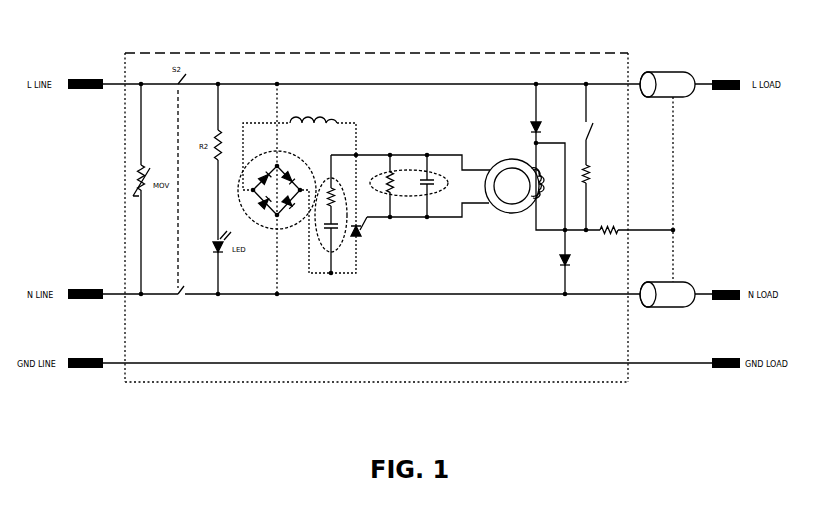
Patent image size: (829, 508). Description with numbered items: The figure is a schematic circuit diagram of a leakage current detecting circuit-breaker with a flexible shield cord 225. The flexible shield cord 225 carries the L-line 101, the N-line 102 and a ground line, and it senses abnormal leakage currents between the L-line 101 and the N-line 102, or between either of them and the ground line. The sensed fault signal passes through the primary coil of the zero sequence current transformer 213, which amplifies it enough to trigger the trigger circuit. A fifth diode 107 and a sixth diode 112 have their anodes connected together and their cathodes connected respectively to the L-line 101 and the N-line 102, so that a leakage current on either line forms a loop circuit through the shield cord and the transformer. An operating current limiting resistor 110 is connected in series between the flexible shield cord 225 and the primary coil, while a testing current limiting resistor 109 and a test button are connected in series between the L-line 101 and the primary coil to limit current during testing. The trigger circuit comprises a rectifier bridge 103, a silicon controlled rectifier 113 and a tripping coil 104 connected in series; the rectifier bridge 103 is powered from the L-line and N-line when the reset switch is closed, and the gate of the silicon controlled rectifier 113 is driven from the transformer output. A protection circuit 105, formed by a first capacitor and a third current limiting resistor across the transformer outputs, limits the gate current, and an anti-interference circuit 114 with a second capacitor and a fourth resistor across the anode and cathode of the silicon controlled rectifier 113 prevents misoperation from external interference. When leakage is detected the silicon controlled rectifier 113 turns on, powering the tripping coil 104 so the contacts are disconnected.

The L-line 101 is at (113, 82).
The N-line 102 is at (110, 292).
The rectifier bridge 103 is at (265, 148).
The tripping coil 104 is at (318, 115).
The protection circuit 105 is at (402, 162).
The fifth diode 107 is at (540, 121).
The testing current limiting resistor 109 is at (591, 168).
The operating current limiting resistor 110 is at (617, 228).
The sixth diode 112 is at (561, 266).
The silicon controlled rectifier 113 is at (363, 232).
The anti-interference circuit 114 is at (325, 251).
The zero sequence current transformer 213 is at (503, 155).
The flexible shield cord 225 is at (670, 70).